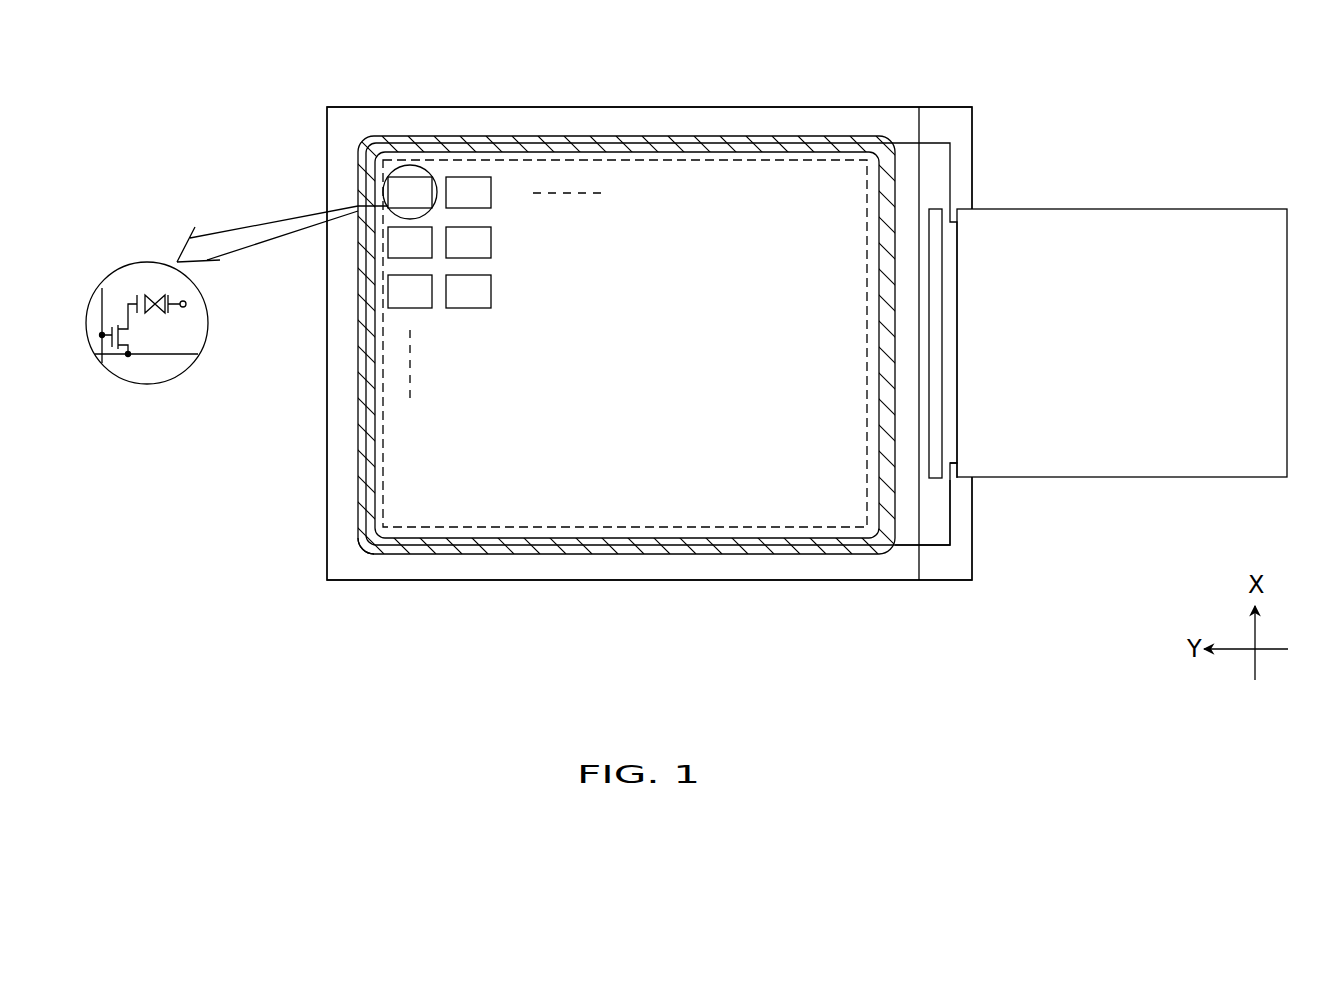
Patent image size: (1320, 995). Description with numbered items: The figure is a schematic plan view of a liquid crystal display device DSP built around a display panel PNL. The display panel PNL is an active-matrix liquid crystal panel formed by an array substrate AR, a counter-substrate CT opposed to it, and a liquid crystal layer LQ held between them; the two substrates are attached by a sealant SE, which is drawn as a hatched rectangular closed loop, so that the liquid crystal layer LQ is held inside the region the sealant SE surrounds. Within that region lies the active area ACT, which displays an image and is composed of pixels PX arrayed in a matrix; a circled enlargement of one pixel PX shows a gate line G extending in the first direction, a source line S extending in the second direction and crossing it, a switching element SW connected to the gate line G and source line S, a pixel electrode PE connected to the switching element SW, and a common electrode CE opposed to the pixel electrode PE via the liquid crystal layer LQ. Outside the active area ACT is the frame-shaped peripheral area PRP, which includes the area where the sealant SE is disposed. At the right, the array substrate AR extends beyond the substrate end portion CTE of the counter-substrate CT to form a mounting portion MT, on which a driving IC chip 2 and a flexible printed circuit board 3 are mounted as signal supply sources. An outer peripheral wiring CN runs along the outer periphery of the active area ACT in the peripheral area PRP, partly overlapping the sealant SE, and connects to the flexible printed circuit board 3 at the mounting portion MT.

The liquid crystal display device DSP is at (988, 95).
The display panel PNL is at (943, 581).
The substrate end portion CTE is at (923, 128).
The counter-substrate CT is at (815, 573).
The sealant SE is at (681, 140).
The peripheral area PRP is at (357, 554).
The active area ACT is at (722, 535).
The pixel PX is at (417, 177).
The gate line G is at (101, 309).
The switching element SW is at (134, 333).
The source line S is at (163, 355).
The pixel electrode PE is at (137, 294).
The liquid crystal layer LQ is at (155, 293).
The common electrode CE is at (187, 304).
The driving IC chip 2 is at (935, 208).
The flexible printed circuit board 3 is at (1135, 208).
The mounting portion MT is at (957, 486).
The array substrate AR is at (960, 543).
The outer peripheral wiring CN is at (902, 546).